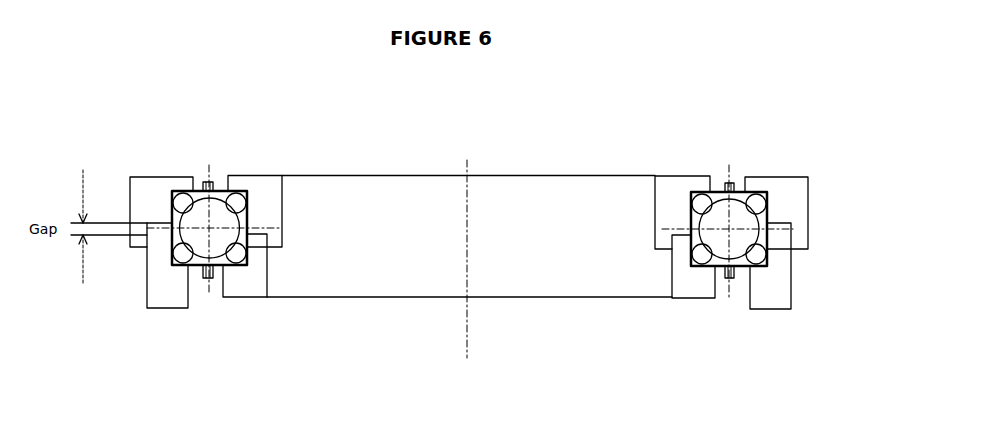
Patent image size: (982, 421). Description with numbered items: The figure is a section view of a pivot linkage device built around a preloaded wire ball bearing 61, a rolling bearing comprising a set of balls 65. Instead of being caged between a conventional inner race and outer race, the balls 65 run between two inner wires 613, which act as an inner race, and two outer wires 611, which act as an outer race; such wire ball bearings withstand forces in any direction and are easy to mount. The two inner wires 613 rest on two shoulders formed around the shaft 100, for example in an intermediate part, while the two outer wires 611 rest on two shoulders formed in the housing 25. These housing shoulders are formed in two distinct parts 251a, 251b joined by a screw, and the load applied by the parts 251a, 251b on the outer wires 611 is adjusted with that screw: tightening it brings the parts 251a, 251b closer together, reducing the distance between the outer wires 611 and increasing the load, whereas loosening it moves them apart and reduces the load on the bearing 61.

The shaft 100 is at (525, 187).
The wire ball bearing 61 is at (722, 183).
The outer wires 611 is at (182, 251).
The inner wires 613 is at (237, 251).
The balls 65 is at (217, 248).
The housing 25 is at (147, 255).
The first distinct part 251a is at (798, 182).
The second distinct part 251b is at (763, 292).